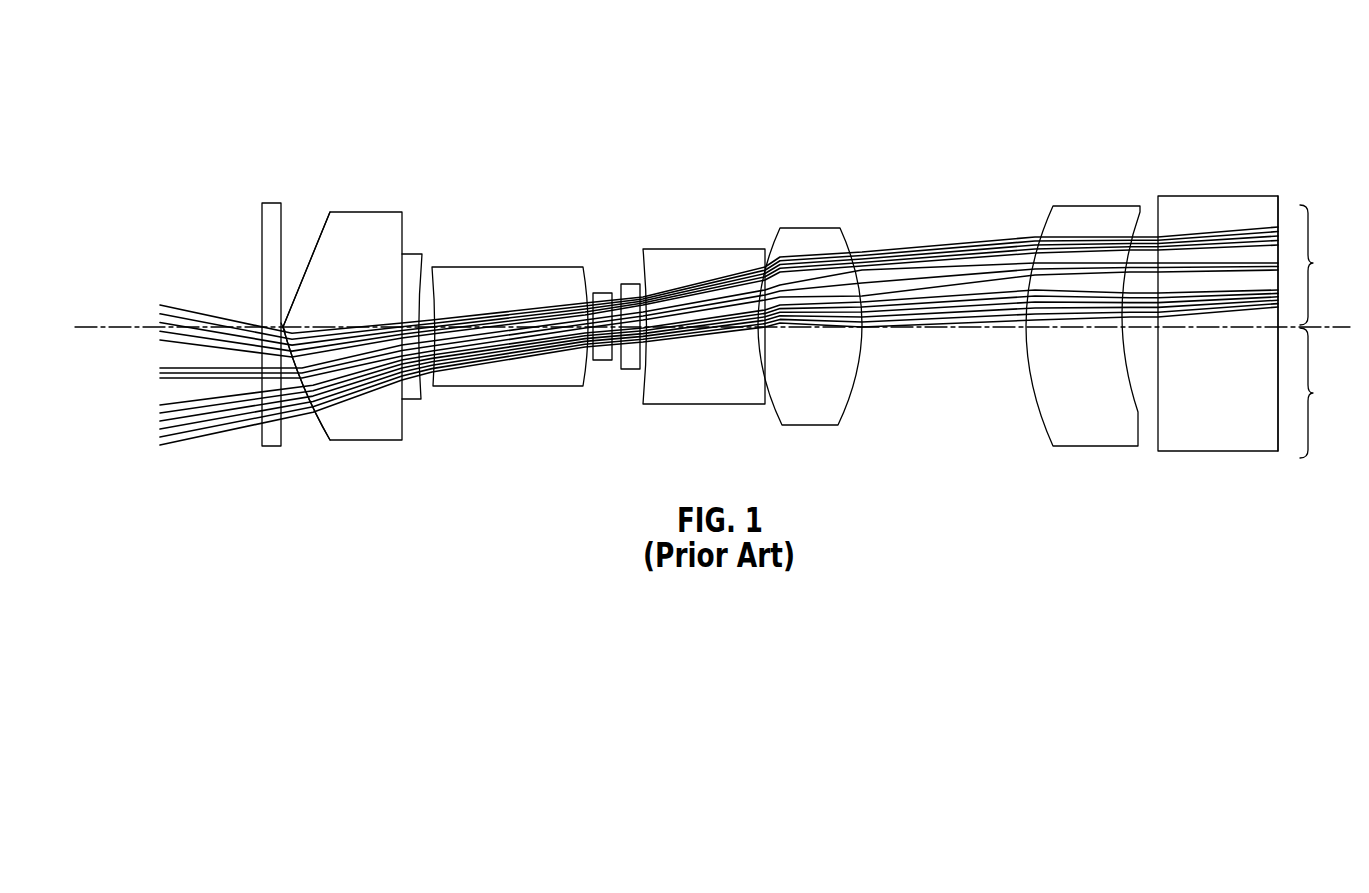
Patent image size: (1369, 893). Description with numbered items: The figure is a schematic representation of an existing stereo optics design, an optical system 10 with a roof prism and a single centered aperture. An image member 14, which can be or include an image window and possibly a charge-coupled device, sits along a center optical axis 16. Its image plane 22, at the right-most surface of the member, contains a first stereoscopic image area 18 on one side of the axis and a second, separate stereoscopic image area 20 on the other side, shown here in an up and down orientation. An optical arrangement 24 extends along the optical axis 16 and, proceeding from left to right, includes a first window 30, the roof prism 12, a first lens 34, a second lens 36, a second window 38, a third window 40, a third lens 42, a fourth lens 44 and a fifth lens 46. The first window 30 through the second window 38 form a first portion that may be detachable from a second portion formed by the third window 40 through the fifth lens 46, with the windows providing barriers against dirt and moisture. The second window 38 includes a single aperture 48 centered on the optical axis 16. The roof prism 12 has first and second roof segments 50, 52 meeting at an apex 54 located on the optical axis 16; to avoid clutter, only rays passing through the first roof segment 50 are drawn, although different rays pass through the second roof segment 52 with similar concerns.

The optical system 10 is at (300, 77).
The roof prism 12 is at (358, 225).
The image member 14 is at (1215, 206).
The center optical axis 16 is at (75, 322).
The first stereoscopic image area 18 is at (1325, 265).
The second stereoscopic image area 20 is at (1325, 393).
The image plane 22 is at (1284, 203).
The optical arrangement 24 is at (834, 131).
The first window 30 is at (261, 229).
The first lens 34 is at (410, 260).
The second lens 36 is at (500, 287).
The second window 38 is at (602, 293).
The third window 40 is at (632, 284).
The third lens 42 is at (695, 260).
The fourth lens 44 is at (805, 243).
The fifth lens 46 is at (1092, 220).
The single aperture 48 is at (603, 371).
The first roof segment 50 is at (317, 427).
The second roof segment 52 is at (320, 228).
The apex 54 is at (282, 322).